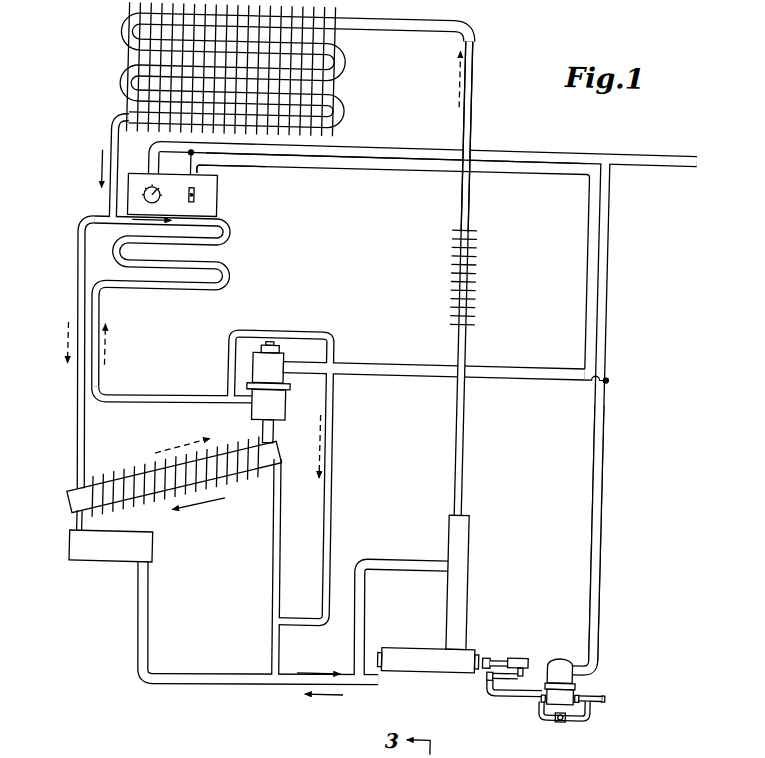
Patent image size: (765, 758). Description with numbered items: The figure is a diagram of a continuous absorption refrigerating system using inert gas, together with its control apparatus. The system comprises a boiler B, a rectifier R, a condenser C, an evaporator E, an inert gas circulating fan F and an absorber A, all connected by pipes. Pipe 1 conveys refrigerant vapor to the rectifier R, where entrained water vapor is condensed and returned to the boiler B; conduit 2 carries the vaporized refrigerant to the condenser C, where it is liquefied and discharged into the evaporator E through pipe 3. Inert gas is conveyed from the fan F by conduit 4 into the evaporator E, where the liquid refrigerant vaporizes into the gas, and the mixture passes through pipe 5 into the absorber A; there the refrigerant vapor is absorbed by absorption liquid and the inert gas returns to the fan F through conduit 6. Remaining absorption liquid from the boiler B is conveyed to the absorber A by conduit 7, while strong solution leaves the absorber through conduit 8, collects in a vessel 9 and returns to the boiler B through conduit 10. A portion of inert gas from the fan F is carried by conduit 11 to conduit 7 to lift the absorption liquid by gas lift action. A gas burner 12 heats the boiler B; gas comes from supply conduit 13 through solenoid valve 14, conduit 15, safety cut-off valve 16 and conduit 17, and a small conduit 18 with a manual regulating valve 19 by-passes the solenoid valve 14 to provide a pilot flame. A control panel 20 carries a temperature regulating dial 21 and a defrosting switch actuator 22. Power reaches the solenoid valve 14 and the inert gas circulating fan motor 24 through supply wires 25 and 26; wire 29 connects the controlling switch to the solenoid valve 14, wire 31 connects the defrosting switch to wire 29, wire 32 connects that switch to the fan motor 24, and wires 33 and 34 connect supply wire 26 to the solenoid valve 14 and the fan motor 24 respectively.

The pipe 1 is at (466, 448).
The conduit 2 is at (464, 201).
The pipe 3 is at (102, 140).
The conduit 4 is at (145, 401).
The pipe 5 is at (74, 440).
The conduit 6 is at (278, 430).
The conduit 7 is at (282, 566).
The conduit 8 is at (71, 528).
The vessel 9 is at (97, 570).
The conduit 10 is at (199, 688).
The conduit 11 is at (335, 497).
The gas burner 12 is at (496, 656).
The supply conduit 13 is at (607, 692).
The solenoid valve 14 is at (566, 664).
The conduit 15 is at (527, 695).
The safety cut-off valve 16 is at (485, 680).
The conduit 17 is at (532, 667).
The small conduit 18 is at (596, 713).
The manual regulating valve 19 is at (568, 720).
The control panel 20 is at (212, 200).
The temperature regulating dial 21 is at (138, 201).
The defrosting switch actuator 22 is at (192, 203).
The inert gas circulating fan motor 24 is at (274, 368).
The supply wire 25 is at (659, 149).
The supply wire 26 is at (671, 160).
The wire 29 is at (286, 158).
The wire 31 is at (191, 170).
The wire 32 is at (396, 168).
The wire 33 is at (604, 515).
The wire 34 is at (396, 375).
The condenser C is at (340, 64).
The rectifier R is at (465, 276).
The evaporator E is at (226, 247).
The absorber A is at (112, 495).
The inert gas circulating fan F is at (260, 416).
The boiler B is at (416, 655).